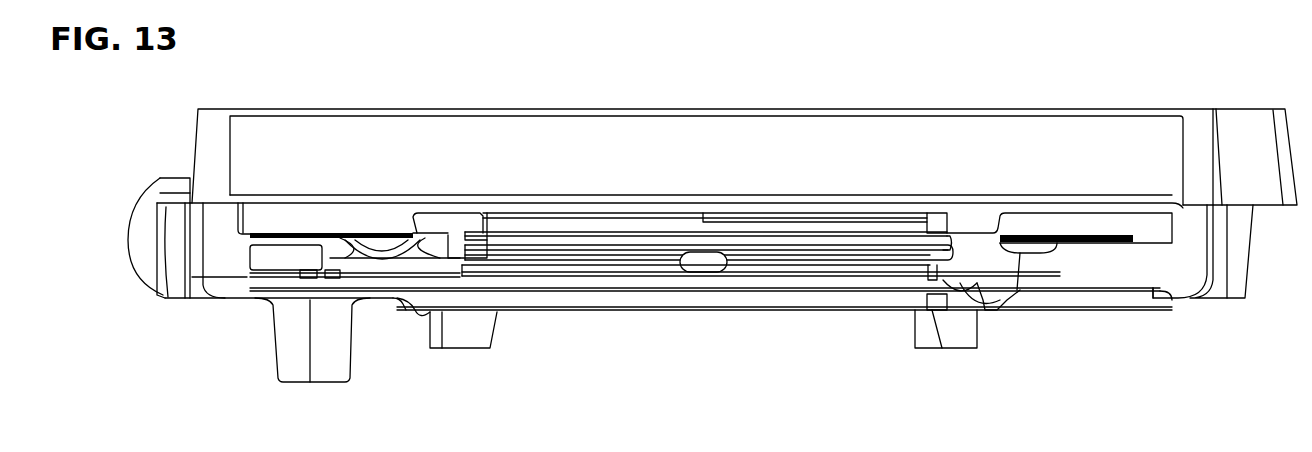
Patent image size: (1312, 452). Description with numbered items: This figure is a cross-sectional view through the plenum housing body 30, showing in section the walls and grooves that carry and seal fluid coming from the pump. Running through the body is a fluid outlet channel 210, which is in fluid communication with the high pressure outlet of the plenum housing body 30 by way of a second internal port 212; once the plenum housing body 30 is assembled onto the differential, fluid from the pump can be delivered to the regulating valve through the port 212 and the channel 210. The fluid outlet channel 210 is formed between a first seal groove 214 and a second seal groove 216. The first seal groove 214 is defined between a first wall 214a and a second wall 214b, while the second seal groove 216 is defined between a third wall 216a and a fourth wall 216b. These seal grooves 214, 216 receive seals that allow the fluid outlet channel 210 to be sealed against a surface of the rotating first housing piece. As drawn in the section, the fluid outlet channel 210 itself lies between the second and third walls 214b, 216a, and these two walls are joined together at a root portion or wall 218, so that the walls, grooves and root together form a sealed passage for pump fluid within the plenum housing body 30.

The plenum housing body 30 is at (133, 136).
The fluid outlet channel 210 is at (497, 260).
The second internal port 212 is at (700, 262).
The first seal groove 214 is at (482, 240).
The first wall 214a is at (933, 225).
The second wall 214b is at (943, 243).
The second seal groove 216 is at (825, 285).
The third wall 216a is at (930, 298).
The fourth wall 216b is at (933, 270).
The root portion 218 is at (458, 262).